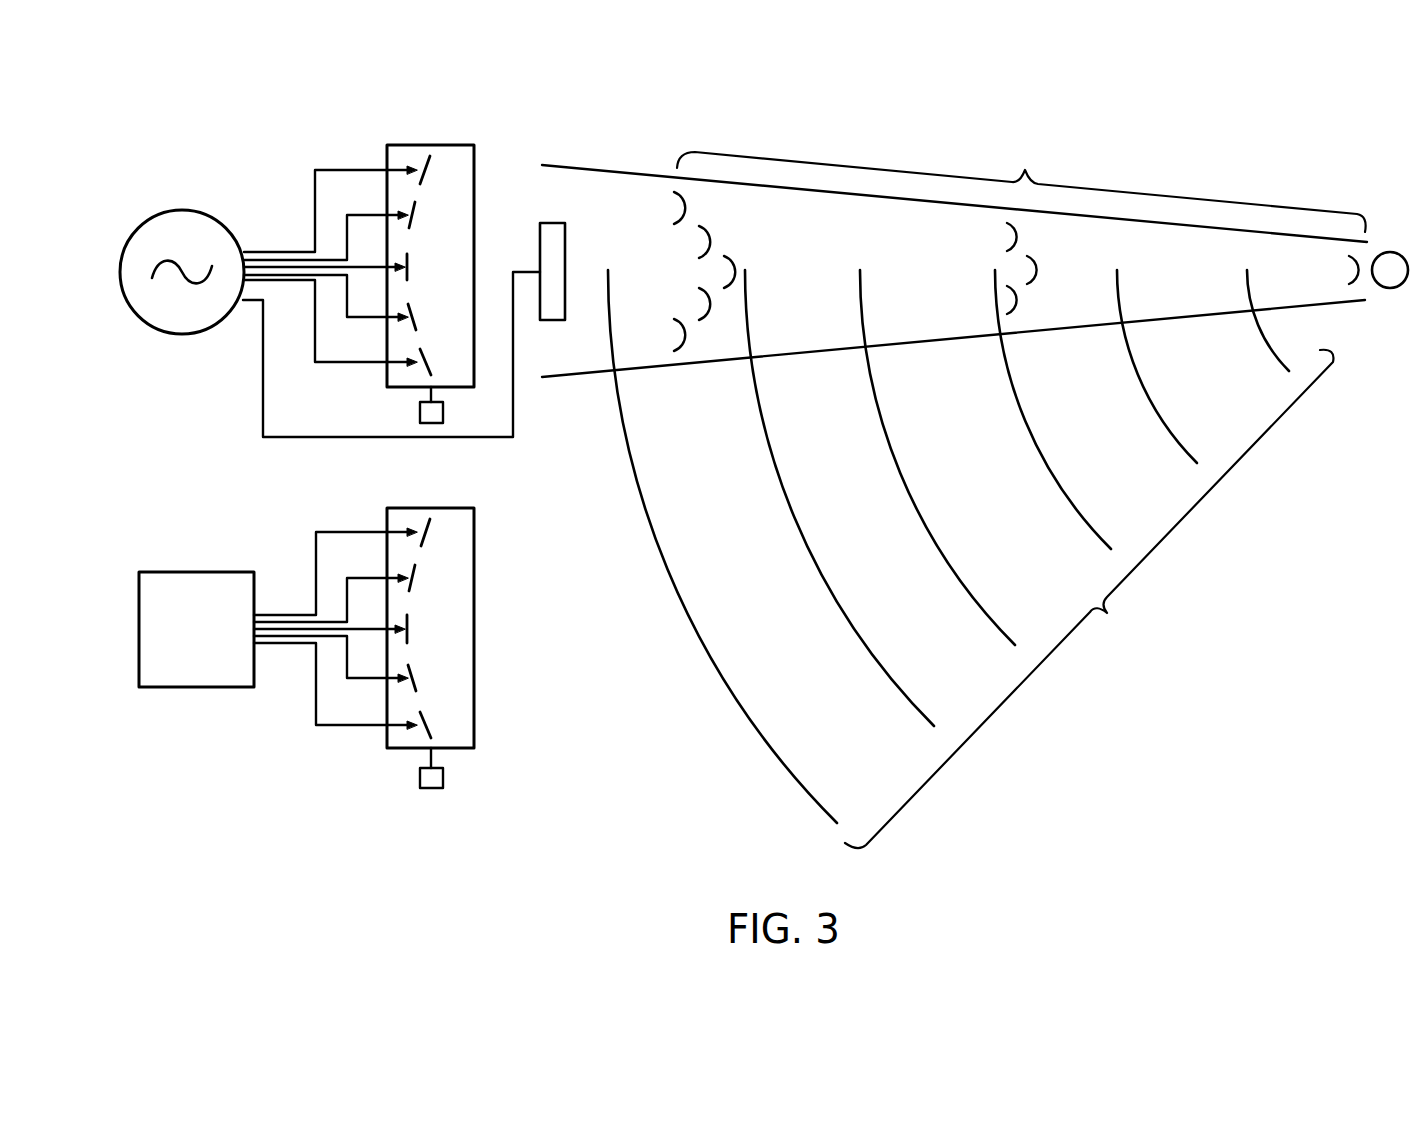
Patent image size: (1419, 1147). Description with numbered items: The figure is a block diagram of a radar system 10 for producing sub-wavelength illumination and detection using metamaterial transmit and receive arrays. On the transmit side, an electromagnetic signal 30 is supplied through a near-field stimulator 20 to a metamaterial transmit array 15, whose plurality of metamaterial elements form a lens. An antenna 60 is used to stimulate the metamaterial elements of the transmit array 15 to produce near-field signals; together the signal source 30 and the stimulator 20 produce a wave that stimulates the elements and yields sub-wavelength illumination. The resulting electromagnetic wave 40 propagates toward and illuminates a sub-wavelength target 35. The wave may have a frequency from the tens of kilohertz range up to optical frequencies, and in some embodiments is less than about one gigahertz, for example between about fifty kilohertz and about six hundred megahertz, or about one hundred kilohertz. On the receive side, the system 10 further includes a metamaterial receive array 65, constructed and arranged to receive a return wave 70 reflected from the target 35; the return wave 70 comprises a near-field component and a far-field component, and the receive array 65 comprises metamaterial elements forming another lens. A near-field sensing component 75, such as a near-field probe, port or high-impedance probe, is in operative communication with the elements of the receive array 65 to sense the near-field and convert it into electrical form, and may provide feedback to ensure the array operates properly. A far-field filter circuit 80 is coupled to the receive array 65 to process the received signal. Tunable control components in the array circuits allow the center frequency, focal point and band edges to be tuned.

The radar system 10 is at (926, 108).
The metamaterial transmit array 15 is at (426, 246).
The near-field stimulator 20 is at (404, 162).
The electromagnetic signal 30 is at (172, 210).
The sub-wavelength target 35 is at (1390, 288).
The electromagnetic wave 40 is at (1020, 244).
The antenna 60 is at (566, 270).
The metamaterial receive array 65 is at (438, 639).
The return wave 70 is at (970, 559).
The near-field sensing component 75 is at (405, 528).
The far-field filter circuit 80 is at (196, 688).